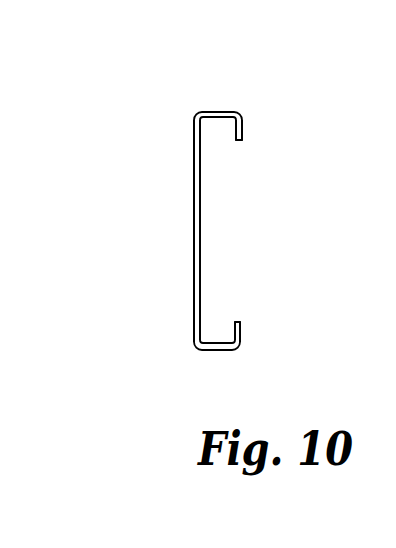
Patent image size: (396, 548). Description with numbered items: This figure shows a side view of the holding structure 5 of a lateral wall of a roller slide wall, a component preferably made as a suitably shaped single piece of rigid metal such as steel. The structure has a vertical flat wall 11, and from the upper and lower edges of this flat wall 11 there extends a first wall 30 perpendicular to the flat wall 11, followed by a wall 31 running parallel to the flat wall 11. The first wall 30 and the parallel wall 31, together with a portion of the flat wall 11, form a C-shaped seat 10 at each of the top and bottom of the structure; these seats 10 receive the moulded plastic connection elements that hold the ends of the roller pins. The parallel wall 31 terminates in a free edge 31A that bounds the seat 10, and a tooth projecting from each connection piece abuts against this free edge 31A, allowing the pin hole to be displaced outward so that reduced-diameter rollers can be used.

The holding structure 5 is at (192, 277).
The C-shaped seat 10 is at (220, 127).
The vertical flat wall 11 is at (194, 226).
The first wall 30 is at (217, 111).
The wall parallel to the flat wall 31 is at (243, 128).
The free edge 31A is at (243, 139).